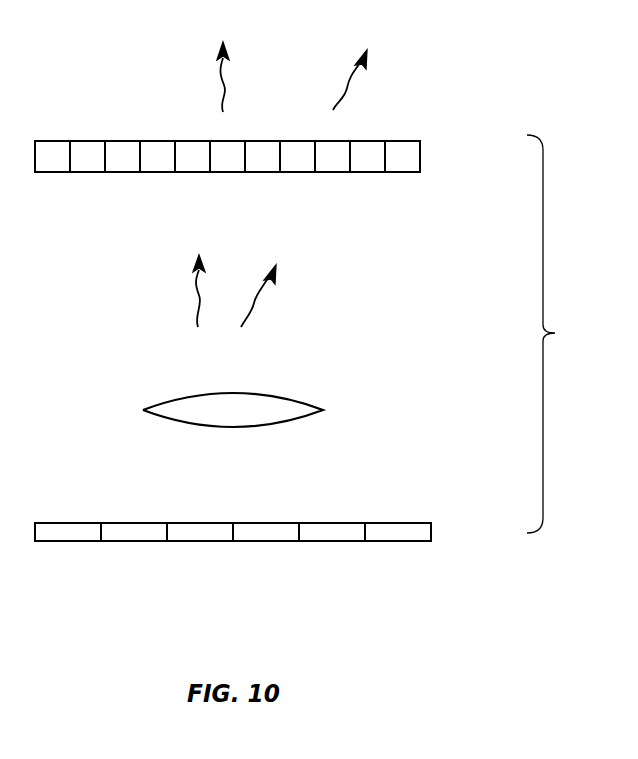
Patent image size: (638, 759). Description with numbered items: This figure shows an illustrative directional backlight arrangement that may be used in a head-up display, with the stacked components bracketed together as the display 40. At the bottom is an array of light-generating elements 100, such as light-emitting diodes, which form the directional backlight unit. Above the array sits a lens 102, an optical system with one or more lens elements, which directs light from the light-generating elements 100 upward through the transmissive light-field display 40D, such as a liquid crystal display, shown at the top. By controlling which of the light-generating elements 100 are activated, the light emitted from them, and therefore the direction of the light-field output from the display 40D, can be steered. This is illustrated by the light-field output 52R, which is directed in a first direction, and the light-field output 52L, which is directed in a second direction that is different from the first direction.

The display 40 is at (554, 334).
The transmissive light-field display 40D is at (433, 156).
The light-field output 52R is at (225, 85).
The light-field output 52L is at (349, 88).
The light-generating elements 100 is at (127, 533).
The lens 102 is at (288, 412).